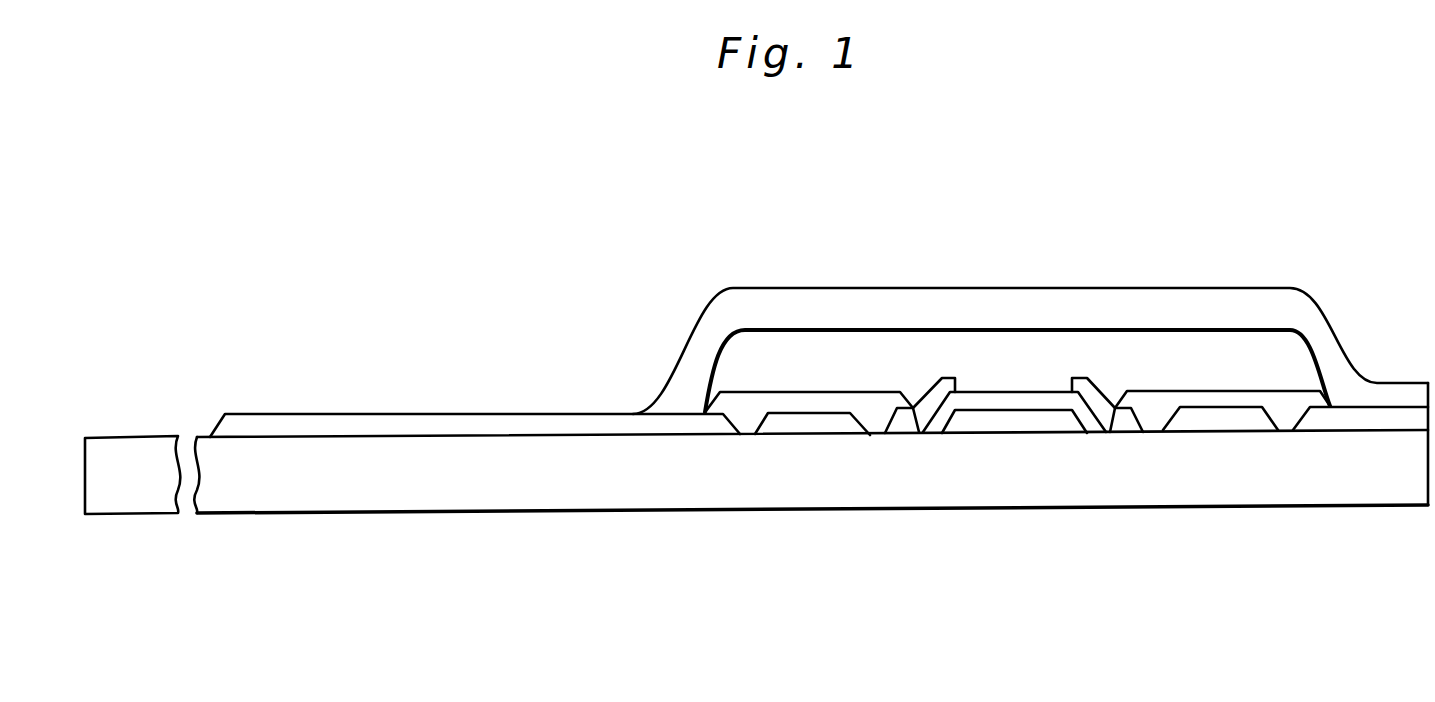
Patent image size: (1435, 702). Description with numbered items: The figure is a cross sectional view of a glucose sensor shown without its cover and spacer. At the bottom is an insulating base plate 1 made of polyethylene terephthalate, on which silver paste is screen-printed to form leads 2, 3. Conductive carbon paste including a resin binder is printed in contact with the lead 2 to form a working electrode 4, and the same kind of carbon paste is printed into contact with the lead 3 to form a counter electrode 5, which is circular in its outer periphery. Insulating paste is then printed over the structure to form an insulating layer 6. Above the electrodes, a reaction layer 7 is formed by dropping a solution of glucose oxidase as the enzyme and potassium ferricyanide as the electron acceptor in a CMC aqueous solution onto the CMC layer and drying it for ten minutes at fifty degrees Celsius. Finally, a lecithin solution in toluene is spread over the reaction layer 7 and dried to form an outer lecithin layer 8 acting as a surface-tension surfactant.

The insulating base plate 1 is at (353, 475).
The lead 2 is at (1017, 435).
The lead 3 is at (813, 435).
The working electrode 4 is at (1013, 403).
The counter electrode 5 is at (812, 405).
The insulating layer 6 is at (468, 428).
The reaction layer 7 is at (877, 358).
The lecithin layer 8 is at (1085, 312).